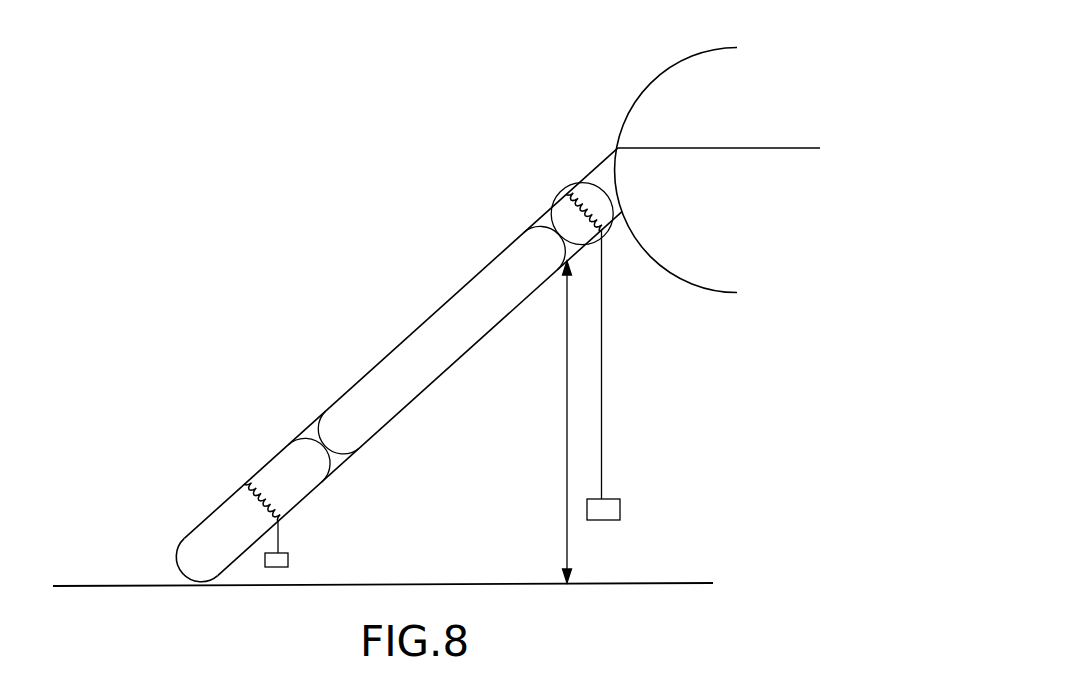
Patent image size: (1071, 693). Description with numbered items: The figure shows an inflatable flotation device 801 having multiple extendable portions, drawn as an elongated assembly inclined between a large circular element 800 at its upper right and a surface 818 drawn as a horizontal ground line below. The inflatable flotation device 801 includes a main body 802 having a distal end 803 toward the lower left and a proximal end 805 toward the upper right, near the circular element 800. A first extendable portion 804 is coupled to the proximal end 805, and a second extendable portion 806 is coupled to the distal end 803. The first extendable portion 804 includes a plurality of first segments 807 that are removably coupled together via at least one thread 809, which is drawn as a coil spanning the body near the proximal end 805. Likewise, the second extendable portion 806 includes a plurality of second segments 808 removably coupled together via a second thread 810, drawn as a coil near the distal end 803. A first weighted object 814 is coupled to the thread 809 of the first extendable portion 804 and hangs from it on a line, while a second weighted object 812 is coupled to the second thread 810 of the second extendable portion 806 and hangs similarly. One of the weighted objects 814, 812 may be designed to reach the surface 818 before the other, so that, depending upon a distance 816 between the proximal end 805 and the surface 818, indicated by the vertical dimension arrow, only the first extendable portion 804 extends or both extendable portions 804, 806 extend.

The wheel / hub 800 is at (663, 73).
The inflatable flotation device 801 is at (268, 255).
The main body 802 is at (428, 318).
The distal end 803 is at (315, 427).
The first extendable portion 804 is at (582, 242).
The proximal end 805 is at (540, 220).
The second extendable portion 806 is at (282, 520).
The first segments 807 is at (597, 140).
The second segments 808 is at (221, 436).
The thread 809 is at (577, 187).
The second thread 810 is at (260, 512).
The second weighted object 812 is at (288, 561).
The first weighted object 814 is at (620, 510).
The distance 816 is at (567, 463).
The surface 818 is at (79, 586).